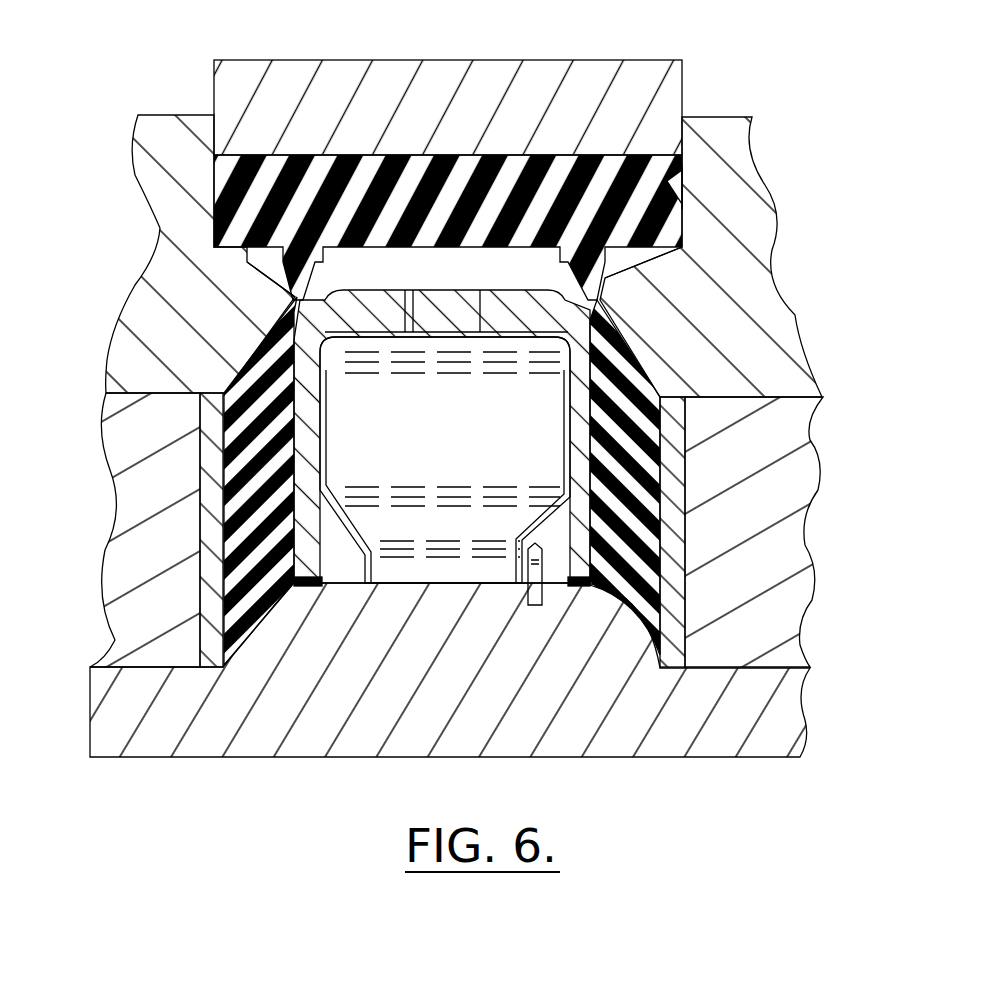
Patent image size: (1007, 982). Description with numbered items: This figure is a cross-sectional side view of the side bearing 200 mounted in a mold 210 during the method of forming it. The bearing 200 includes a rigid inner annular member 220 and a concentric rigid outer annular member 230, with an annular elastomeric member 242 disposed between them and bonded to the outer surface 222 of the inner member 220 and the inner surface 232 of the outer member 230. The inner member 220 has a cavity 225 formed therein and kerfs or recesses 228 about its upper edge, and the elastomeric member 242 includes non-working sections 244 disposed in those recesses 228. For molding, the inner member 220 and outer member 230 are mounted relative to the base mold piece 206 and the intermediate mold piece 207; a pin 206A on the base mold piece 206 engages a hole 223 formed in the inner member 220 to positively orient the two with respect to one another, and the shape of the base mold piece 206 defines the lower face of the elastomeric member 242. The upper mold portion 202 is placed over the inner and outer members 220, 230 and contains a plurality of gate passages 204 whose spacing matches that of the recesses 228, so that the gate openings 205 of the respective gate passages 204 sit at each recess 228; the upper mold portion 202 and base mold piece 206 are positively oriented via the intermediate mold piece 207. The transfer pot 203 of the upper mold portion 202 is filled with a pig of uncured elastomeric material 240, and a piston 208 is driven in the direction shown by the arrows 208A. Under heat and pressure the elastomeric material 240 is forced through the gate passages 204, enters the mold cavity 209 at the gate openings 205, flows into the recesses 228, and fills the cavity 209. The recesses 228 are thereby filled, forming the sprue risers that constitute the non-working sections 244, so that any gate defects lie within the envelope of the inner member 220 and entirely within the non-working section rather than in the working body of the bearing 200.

The side bearing 200 is at (695, 536).
The upper mold portion 202 is at (775, 322).
The transfer pot 203 is at (683, 174).
The gate passages 204 is at (285, 292).
The gate openings 205 is at (292, 297).
The base mold piece 206 is at (782, 710).
The pin 206A is at (532, 593).
The intermediate mold piece 207 is at (777, 625).
The piston 208 is at (594, 75).
The arrows 208A is at (448, 58).
The mold cavity 209 is at (225, 537).
The mold 210 is at (796, 268).
The inner annular member 220 is at (573, 413).
The outer surface 222 is at (283, 486).
The hole 223 is at (527, 560).
The cavity 225 is at (400, 575).
The recesses 228 is at (326, 350).
The outer annular member 230 is at (678, 475).
The inner surface 232 is at (228, 483).
The elastomeric material 240 is at (614, 160).
The elastomeric member 242 is at (652, 562).
The non-working sections 244 is at (290, 312).